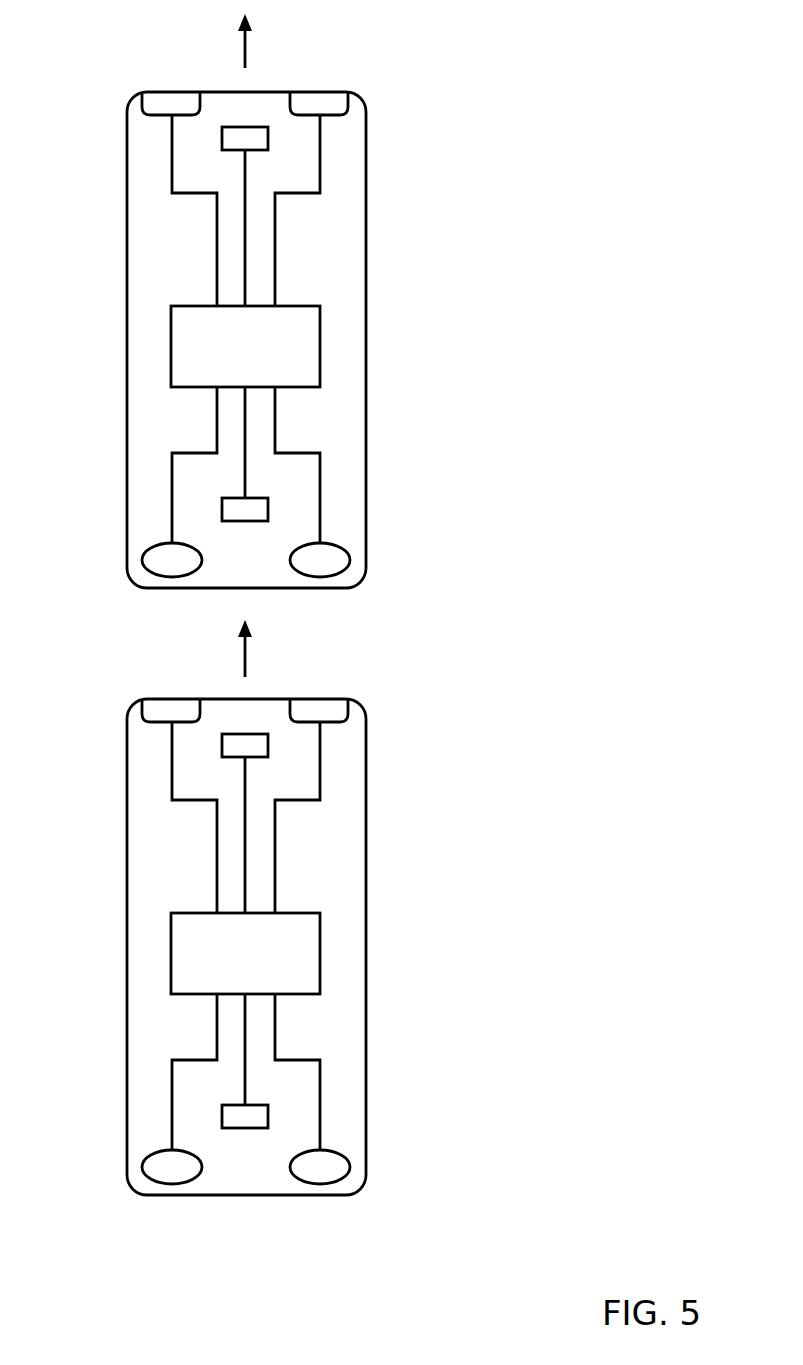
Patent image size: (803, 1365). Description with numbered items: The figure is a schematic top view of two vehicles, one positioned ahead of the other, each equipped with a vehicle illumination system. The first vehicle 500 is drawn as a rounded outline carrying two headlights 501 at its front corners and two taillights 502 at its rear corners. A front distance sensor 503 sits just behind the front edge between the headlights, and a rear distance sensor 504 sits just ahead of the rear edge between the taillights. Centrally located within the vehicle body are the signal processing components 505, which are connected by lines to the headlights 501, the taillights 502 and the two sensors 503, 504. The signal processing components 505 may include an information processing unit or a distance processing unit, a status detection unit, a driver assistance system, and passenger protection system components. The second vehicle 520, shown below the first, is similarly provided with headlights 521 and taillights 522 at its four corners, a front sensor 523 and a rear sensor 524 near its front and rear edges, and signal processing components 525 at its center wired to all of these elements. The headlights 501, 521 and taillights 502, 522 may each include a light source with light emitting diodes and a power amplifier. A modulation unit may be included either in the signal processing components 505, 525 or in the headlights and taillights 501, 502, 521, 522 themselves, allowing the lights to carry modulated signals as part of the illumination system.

The first vehicle 500 is at (366, 247).
The headlights 501 is at (383, 104).
The taillights 502 is at (383, 566).
The front distance sensor 503 is at (268, 145).
The rear distance sensor 504 is at (268, 515).
The signal processing components 505 is at (320, 370).
The second vehicle 520 is at (294, 907).
The headlights 521 is at (249, 711).
The taillights 522 is at (249, 1168).
The front sensor 523 is at (331, 749).
The rear sensor 524 is at (331, 1120).
The signal processing components 525 is at (305, 953).